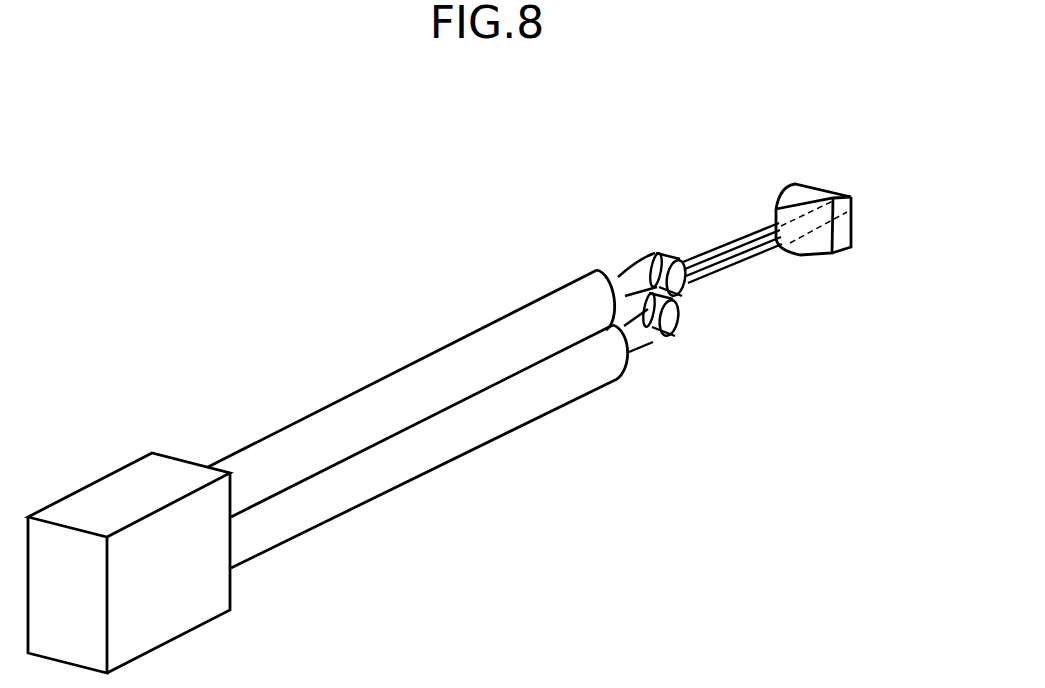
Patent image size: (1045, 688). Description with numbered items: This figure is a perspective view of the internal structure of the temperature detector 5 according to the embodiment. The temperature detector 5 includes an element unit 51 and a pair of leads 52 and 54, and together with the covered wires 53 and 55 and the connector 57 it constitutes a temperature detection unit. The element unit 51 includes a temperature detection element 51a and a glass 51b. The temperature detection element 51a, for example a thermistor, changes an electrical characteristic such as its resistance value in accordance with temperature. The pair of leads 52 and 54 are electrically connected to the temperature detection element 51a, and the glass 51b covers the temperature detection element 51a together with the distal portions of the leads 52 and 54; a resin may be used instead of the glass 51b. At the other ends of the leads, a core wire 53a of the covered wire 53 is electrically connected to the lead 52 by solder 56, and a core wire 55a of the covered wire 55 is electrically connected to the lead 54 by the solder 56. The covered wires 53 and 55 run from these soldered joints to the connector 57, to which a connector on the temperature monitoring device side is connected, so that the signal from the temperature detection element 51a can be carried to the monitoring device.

The temperature detector 5 is at (767, 170).
The element unit 51 is at (813, 180).
The temperature detection element 51a is at (845, 207).
The glass 51b is at (833, 196).
The lead 52 is at (733, 245).
The covered wire 53 is at (413, 360).
The core wire 53a is at (632, 280).
The lead 54 is at (730, 284).
The covered wire 55 is at (442, 465).
The core wire 55a is at (638, 350).
The solder 56 is at (686, 306).
The connector 57 is at (118, 498).